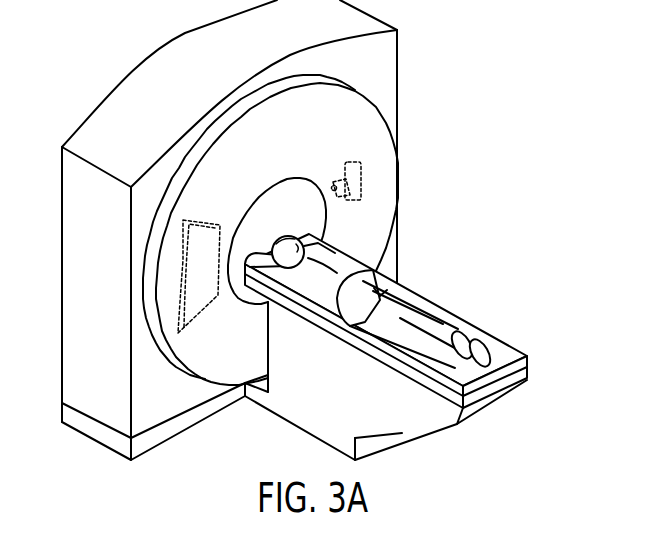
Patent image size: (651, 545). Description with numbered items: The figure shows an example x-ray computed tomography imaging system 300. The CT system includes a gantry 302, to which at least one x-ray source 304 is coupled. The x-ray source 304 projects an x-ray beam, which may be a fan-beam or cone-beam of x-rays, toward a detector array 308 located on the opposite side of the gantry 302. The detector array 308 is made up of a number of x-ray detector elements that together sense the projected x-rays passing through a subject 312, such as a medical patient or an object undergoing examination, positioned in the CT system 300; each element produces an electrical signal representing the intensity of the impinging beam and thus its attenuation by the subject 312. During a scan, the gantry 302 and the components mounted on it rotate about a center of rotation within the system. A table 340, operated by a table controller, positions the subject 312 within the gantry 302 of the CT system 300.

The x-ray computed tomography imaging system 300 is at (308, 230).
The gantry 302 is at (398, 146).
The x-ray source 304 is at (347, 154).
The detector array 308 is at (214, 213).
The subject 312 is at (343, 243).
The table 340 is at (511, 348).